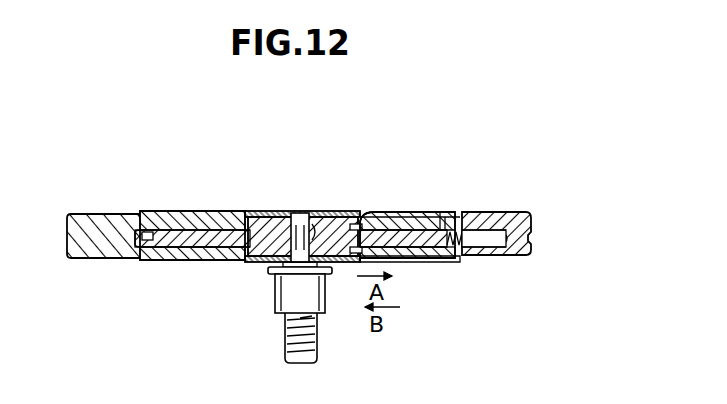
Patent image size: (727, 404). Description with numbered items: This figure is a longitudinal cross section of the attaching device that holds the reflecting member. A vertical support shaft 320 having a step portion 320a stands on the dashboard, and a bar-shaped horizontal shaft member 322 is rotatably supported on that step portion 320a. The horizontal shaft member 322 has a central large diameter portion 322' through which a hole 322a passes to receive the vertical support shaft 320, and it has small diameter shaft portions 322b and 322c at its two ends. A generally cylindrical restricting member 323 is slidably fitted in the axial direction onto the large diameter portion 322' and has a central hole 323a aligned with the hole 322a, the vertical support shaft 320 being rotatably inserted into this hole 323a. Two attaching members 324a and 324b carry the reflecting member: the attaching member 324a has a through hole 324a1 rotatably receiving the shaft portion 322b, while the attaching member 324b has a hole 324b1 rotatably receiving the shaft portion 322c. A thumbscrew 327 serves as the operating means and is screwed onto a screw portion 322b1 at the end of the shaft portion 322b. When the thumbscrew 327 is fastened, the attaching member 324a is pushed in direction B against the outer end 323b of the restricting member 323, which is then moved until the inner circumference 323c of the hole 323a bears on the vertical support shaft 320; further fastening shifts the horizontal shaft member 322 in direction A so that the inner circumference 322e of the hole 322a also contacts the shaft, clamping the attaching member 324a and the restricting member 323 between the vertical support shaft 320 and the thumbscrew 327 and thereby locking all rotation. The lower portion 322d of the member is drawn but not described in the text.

The vertical support shaft 320 is at (310, 222).
The step portion 320a is at (268, 264).
The horizontal shaft member 322 is at (410, 193).
The central large diameter portion 322' is at (298, 177).
The hole 322a is at (364, 214).
The small diameter shaft portion 322b is at (446, 214).
The screw portion 322b1 is at (510, 228).
The small diameter shaft portion 322c is at (180, 212).
The lower plate portion 322d is at (400, 262).
The inner circumference 322e is at (341, 262).
The restricting member 323 is at (276, 216).
The central hole 323a is at (312, 224).
The outer end 323b is at (441, 211).
The inner circumference 323c is at (293, 285).
The attaching member 324a is at (445, 260).
The through hole 324a1 is at (448, 212).
The attaching member 324b is at (125, 212).
The hole 324b1 is at (164, 258).
The thumbscrew 327 is at (533, 246).